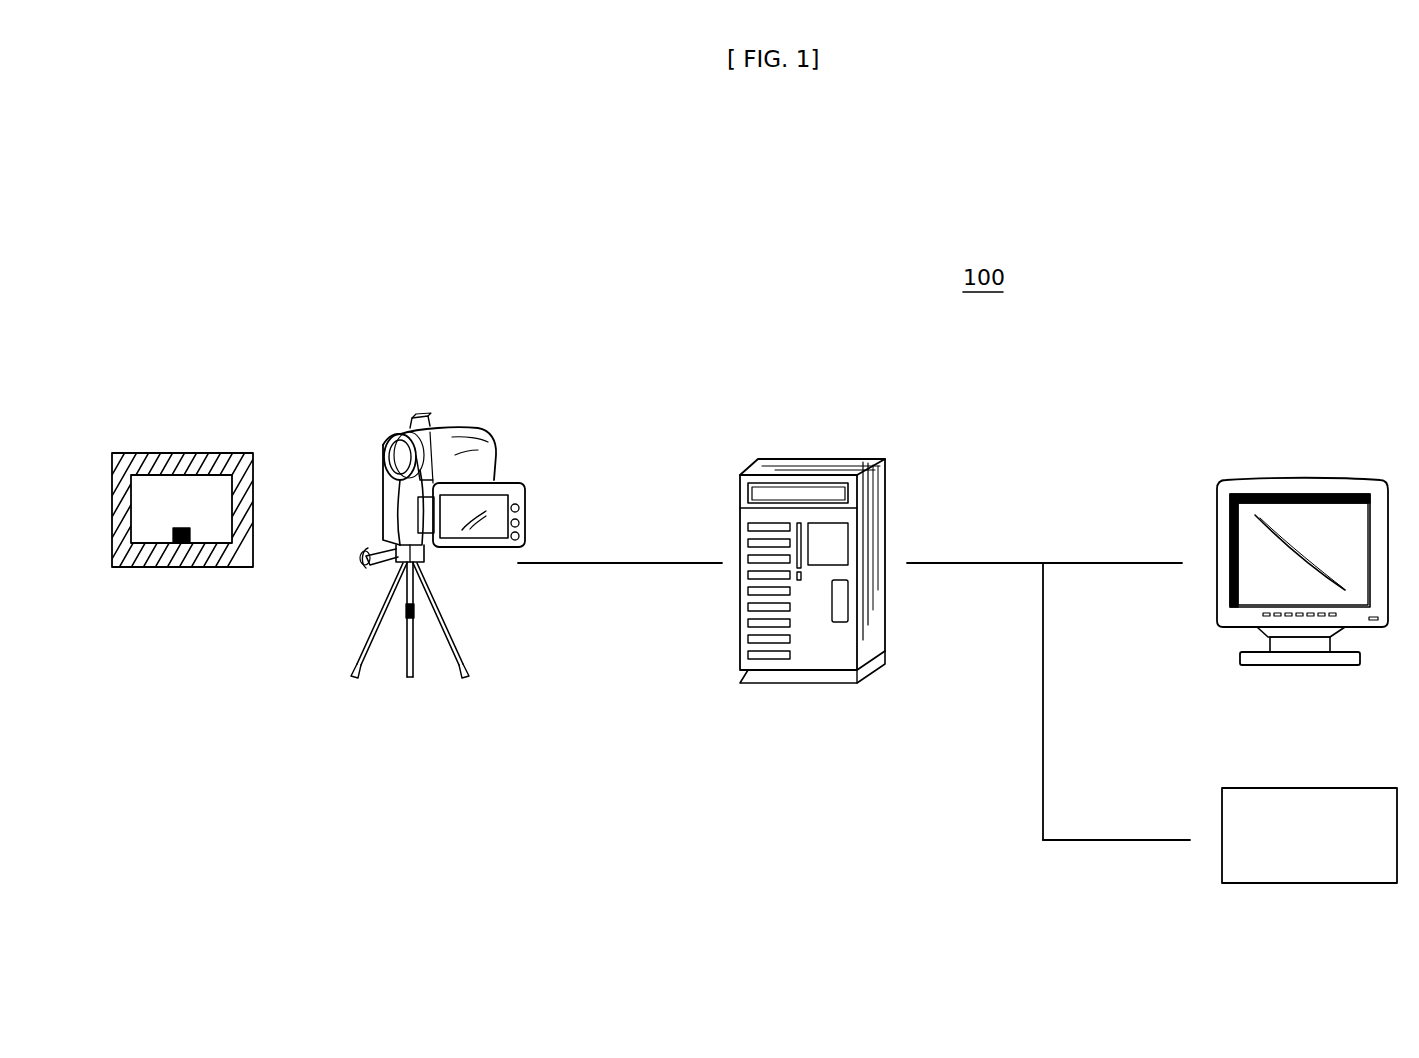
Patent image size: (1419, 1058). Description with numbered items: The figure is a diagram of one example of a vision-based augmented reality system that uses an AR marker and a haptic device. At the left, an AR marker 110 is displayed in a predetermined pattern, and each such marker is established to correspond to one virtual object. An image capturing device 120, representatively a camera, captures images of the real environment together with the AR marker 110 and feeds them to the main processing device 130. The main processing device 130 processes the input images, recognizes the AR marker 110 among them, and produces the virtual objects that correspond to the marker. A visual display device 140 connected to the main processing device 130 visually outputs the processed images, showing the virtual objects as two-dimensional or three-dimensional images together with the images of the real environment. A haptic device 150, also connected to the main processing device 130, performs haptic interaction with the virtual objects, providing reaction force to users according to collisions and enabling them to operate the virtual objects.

The AR marker 110 is at (178, 453).
The image capturing device 120 is at (466, 430).
The main processing device 130 is at (805, 458).
The visual display device 140 is at (1300, 480).
The haptic device 150 is at (1296, 788).